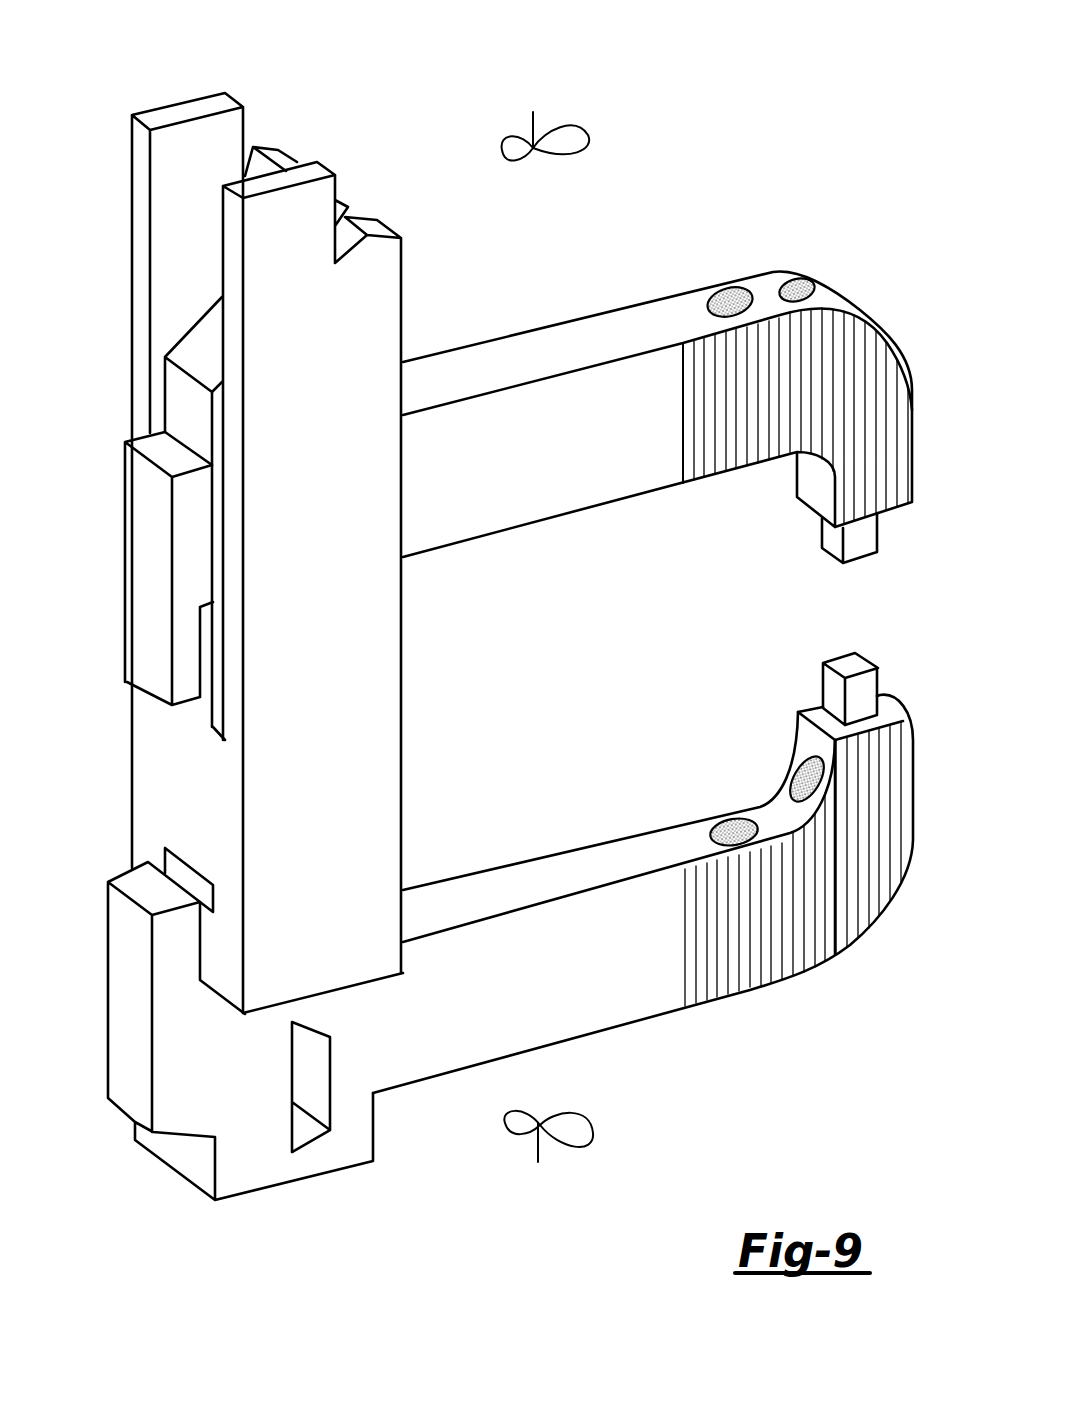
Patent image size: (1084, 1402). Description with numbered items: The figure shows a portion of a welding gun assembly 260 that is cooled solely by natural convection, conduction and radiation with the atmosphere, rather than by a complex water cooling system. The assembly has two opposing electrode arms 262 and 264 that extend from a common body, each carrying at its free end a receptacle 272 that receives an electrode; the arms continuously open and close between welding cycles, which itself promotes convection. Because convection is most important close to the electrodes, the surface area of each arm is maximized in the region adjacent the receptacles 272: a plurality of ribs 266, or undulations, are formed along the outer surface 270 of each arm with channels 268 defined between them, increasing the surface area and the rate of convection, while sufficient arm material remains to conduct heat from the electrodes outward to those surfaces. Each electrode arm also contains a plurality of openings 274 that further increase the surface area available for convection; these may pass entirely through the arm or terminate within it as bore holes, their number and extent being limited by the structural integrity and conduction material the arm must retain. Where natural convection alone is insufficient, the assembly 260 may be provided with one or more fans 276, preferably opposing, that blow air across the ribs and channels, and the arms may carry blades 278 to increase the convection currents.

The welding gun assembly 260 is at (690, 120).
The electrode arm 262 is at (508, 481).
The electrode arm 264 is at (519, 995).
The ribs 266 is at (702, 333).
The channels 268 is at (710, 468).
The outer surface 270 is at (492, 358).
The receptacles 272 is at (853, 563).
The openings 274 is at (795, 280).
The fans 276 is at (533, 123).
The blades 278 is at (305, 1128).